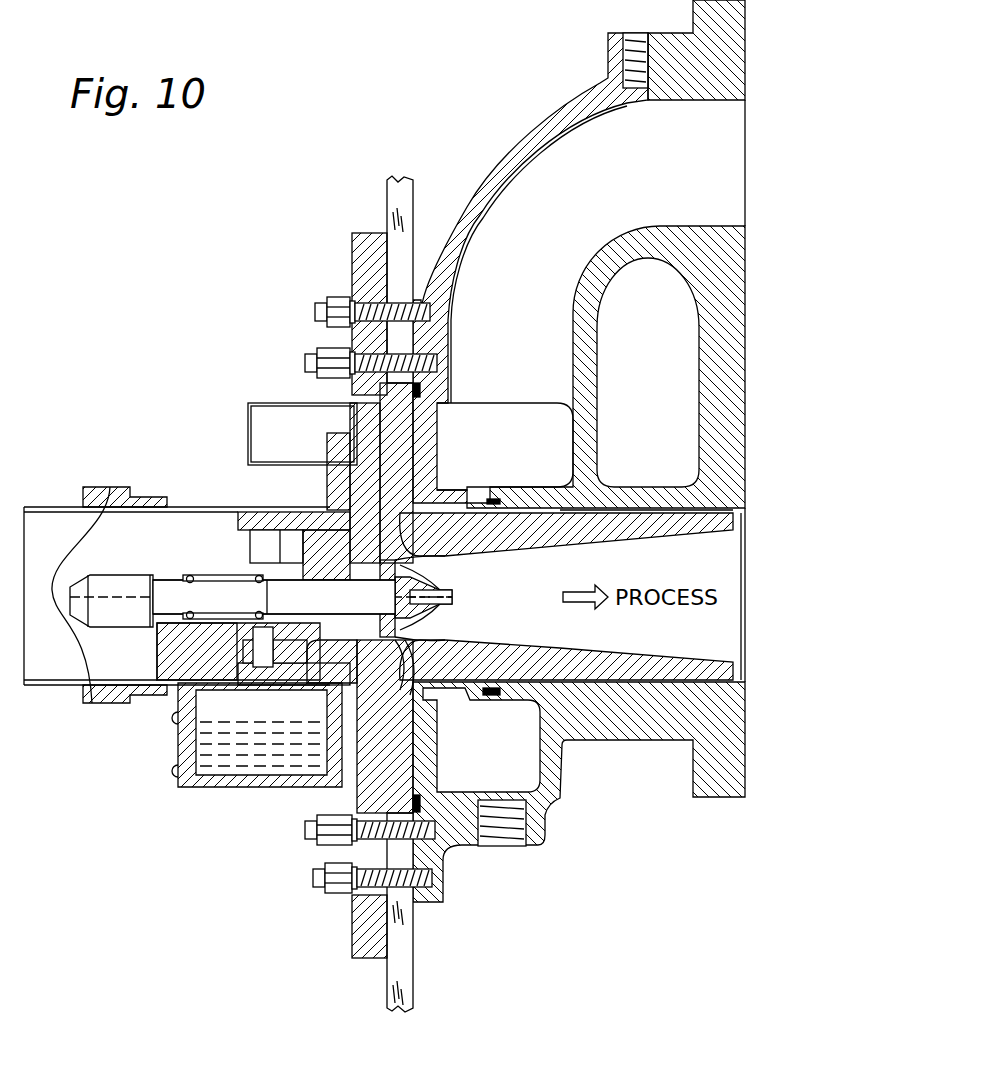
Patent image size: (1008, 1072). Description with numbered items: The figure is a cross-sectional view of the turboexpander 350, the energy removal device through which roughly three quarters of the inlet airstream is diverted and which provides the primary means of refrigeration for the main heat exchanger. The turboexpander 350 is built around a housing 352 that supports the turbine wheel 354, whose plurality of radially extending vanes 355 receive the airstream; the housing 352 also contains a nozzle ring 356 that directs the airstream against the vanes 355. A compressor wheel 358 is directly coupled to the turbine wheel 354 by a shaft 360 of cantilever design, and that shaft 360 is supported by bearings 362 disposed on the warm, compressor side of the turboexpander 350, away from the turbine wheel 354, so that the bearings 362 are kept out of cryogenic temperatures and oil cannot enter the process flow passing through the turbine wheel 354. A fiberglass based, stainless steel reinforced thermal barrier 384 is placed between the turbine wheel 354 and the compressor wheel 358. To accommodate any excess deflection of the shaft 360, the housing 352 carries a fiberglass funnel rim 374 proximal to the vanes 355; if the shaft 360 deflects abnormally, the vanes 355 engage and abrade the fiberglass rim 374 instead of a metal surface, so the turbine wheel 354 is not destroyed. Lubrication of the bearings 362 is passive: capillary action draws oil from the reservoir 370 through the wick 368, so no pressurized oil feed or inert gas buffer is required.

The turboexpander 350 is at (185, 423).
The housing 352 is at (355, 958).
The turbine wheel 354 is at (417, 632).
The vanes 355 is at (420, 568).
The nozzle ring 356 is at (400, 737).
The compressor wheel 358 is at (340, 557).
The shaft 360 is at (398, 695).
The bearings 362 is at (255, 578).
The wick 368 is at (215, 690).
The reservoir 370 is at (230, 764).
The fiberglass rim 374 is at (408, 525).
The thermal barrier 384 is at (478, 846).